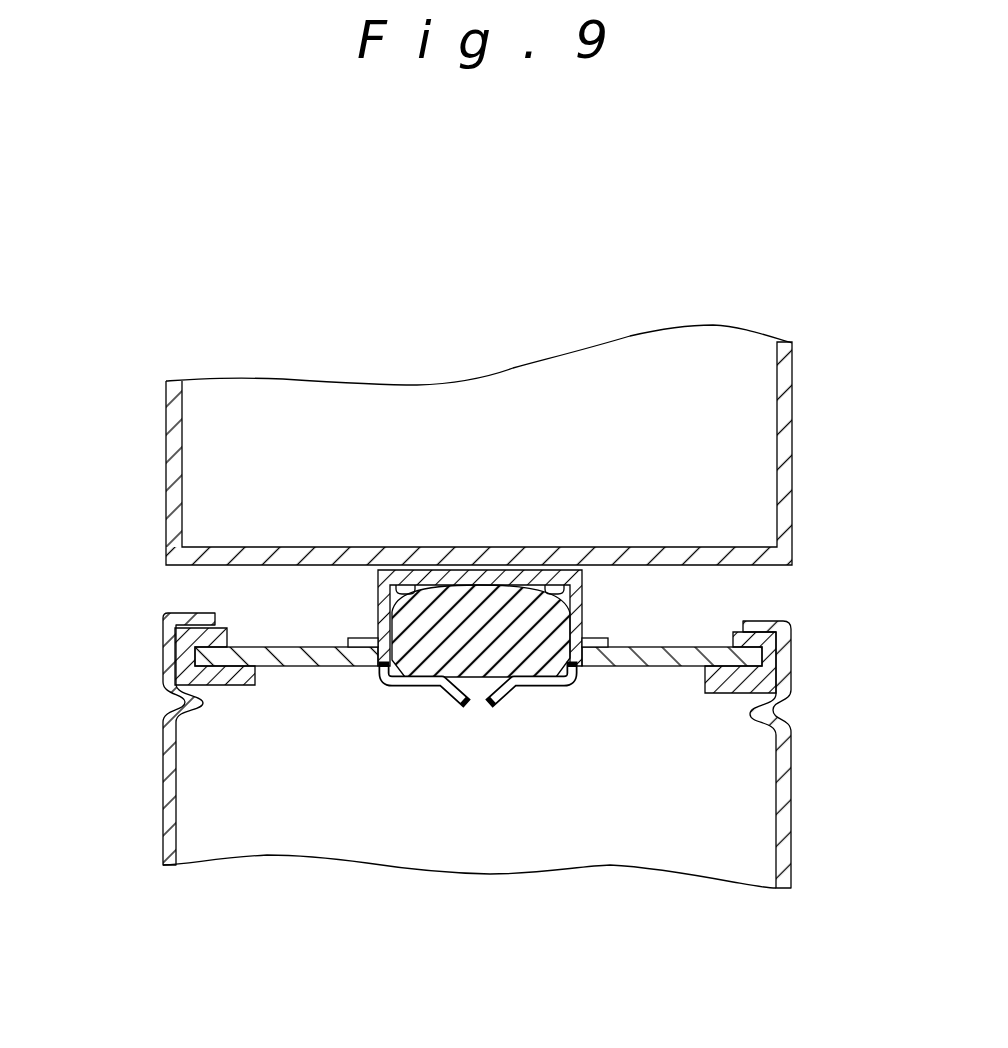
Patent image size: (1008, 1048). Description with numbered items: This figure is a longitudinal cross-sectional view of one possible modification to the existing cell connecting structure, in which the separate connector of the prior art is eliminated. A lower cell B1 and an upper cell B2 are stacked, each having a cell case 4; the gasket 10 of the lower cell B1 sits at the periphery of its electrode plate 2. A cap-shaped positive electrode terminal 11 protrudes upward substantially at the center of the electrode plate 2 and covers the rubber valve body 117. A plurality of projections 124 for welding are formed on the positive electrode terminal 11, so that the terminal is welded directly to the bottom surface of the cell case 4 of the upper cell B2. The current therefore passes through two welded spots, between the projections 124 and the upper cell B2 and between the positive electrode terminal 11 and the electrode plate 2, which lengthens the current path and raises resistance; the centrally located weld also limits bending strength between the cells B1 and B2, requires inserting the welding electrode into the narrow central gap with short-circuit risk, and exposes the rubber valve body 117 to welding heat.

The cell case 4 is at (494, 606).
The upper cell B2 is at (796, 455).
The lower cell B1 is at (795, 842).
The gasket 10 is at (725, 693).
The electrode plate 2 is at (335, 666).
The cap-shaped positive electrode terminal 11 is at (363, 580).
The projections 124 is at (405, 572).
The rubber valve body 117 is at (442, 672).